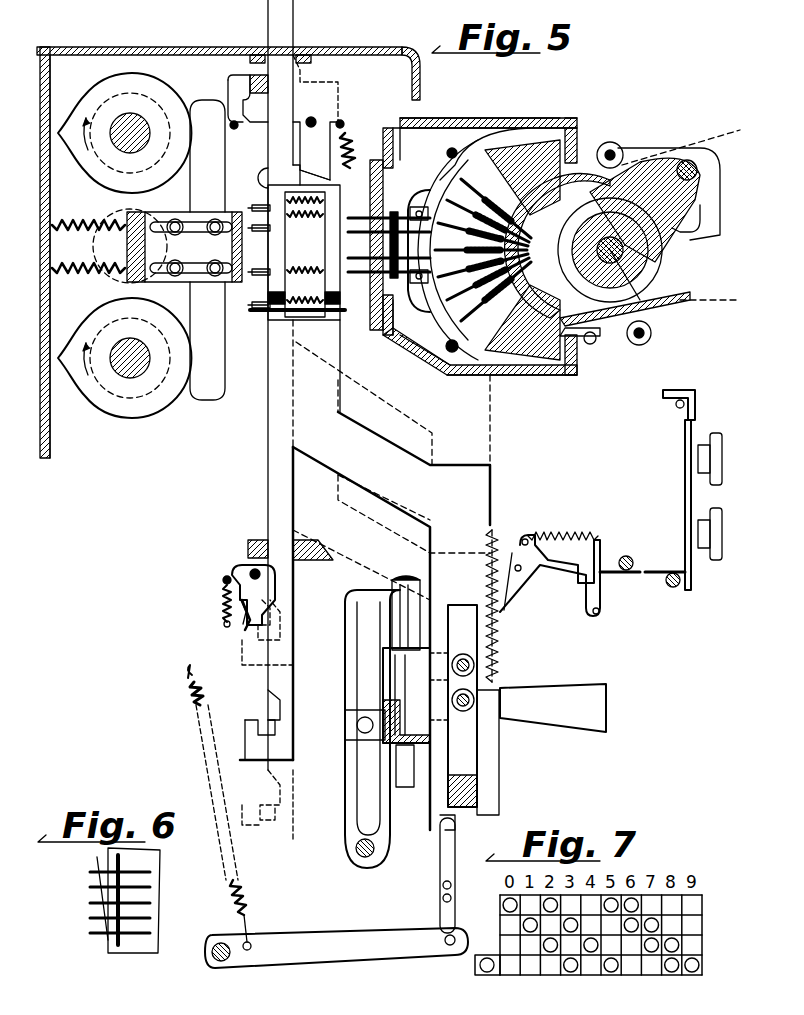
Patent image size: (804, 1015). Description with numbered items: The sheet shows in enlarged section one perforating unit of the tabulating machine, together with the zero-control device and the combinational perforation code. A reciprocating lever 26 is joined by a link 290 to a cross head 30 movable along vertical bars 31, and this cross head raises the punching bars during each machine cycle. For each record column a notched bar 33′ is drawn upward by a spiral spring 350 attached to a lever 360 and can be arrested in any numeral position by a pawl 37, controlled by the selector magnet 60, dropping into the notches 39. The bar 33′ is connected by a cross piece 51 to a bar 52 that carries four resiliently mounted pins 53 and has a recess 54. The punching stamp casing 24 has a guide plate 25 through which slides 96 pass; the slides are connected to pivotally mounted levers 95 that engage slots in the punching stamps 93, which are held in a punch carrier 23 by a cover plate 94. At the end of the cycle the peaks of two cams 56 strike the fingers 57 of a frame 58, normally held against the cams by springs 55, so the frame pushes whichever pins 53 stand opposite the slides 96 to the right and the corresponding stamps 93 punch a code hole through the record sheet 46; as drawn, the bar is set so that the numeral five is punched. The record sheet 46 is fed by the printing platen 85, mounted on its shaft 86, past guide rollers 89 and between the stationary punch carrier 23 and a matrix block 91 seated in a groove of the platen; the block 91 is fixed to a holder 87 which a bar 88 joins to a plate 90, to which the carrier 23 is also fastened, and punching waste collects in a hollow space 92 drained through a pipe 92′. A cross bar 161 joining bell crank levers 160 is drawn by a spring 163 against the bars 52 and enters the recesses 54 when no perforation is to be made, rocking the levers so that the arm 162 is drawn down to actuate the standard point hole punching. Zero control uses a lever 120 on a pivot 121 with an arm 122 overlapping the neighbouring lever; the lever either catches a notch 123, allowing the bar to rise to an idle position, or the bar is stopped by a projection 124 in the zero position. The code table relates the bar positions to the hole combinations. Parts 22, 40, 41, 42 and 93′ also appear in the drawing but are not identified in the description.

In FIG. 5, the housing 22 is at (460, 374).
In FIG. 5, the punch carrier 23 is at (546, 130).
In FIG. 5, the punching stamp casing 24 is at (495, 125).
In FIG. 5, the guide plate 25 is at (372, 181).
In FIG. 5, the reciprocating lever 26 is at (605, 703).
In FIG. 5, the cross head 30 is at (345, 696).
In FIG. 5, the vertical bars 31 is at (404, 585).
In FIG. 5, the notched punching bar 33′ is at (496, 515).
In FIG. 5, the pawl 37 is at (537, 580).
In FIG. 5, the notches 39 is at (495, 655).
In FIG. 5, the pin block 40 is at (348, 740).
In FIG. 5, the lever 41 is at (348, 795).
In FIG. 5, the pivot pin 42 is at (362, 858).
In FIG. 5, the record sheet 46 is at (705, 140).
In FIG. 5, the cross piece 51 is at (372, 440).
In FIG. 5, the punching bar 52 is at (268, 348).
In FIG. 5, the resiliently mounted pins 53 is at (258, 268).
In FIG. 5, the recess 54 is at (265, 178).
In FIG. 5, the springs 55 is at (88, 246).
In FIG. 5, the cams 56 is at (103, 90).
In FIG. 5, the fingers 57 is at (205, 103).
In FIG. 5, the frame 58 is at (230, 235).
In FIG. 5, the selector magnet 60 is at (700, 460).
In FIG. 5, the printing roller 85 is at (598, 145).
In FIG. 5, the shaft 86 is at (590, 315).
In FIG. 5, the holder 87 is at (655, 170).
In FIG. 5, the bar 88 is at (688, 160).
In FIG. 5, the guide rollers 89 is at (652, 332).
In FIG. 5, the plate 90 is at (702, 240).
In FIG. 5, the matrix block 91 is at (520, 165).
In FIG. 5, the hollow space 92 is at (590, 340).
In FIG. 5, the pipe 92′ is at (680, 293).
In FIG. 5, the punching stamps 93 is at (495, 340).
In FIG. 7, the extra cell 93′ is at (476, 964).
In FIG. 5, the cover plate 94 is at (525, 375).
In FIG. 5, the levers 95 is at (430, 185).
In FIG. 5, the slides 96 is at (400, 215).
In FIG. 5, the lever 120 is at (222, 590).
In FIG. 5, the pivot 121 is at (252, 572).
In FIG. 5, the arm 122 is at (240, 620).
In FIG. 6, the arm 122 is at (98, 928).
In FIG. 5, the notch 123 is at (262, 733).
In FIG. 5, the projection 124 is at (250, 724).
In FIG. 5, the bell crank levers 160 is at (258, 125).
In FIG. 5, the cross bar 161 is at (258, 80).
In FIG. 5, the arm 162 is at (311, 120).
In FIG. 5, the spring 163 is at (350, 133).
In FIG. 5, the link 290 is at (490, 688).
In FIG. 5, the spiral spring 350 is at (192, 694).
In FIG. 5, the lever 360 is at (342, 933).